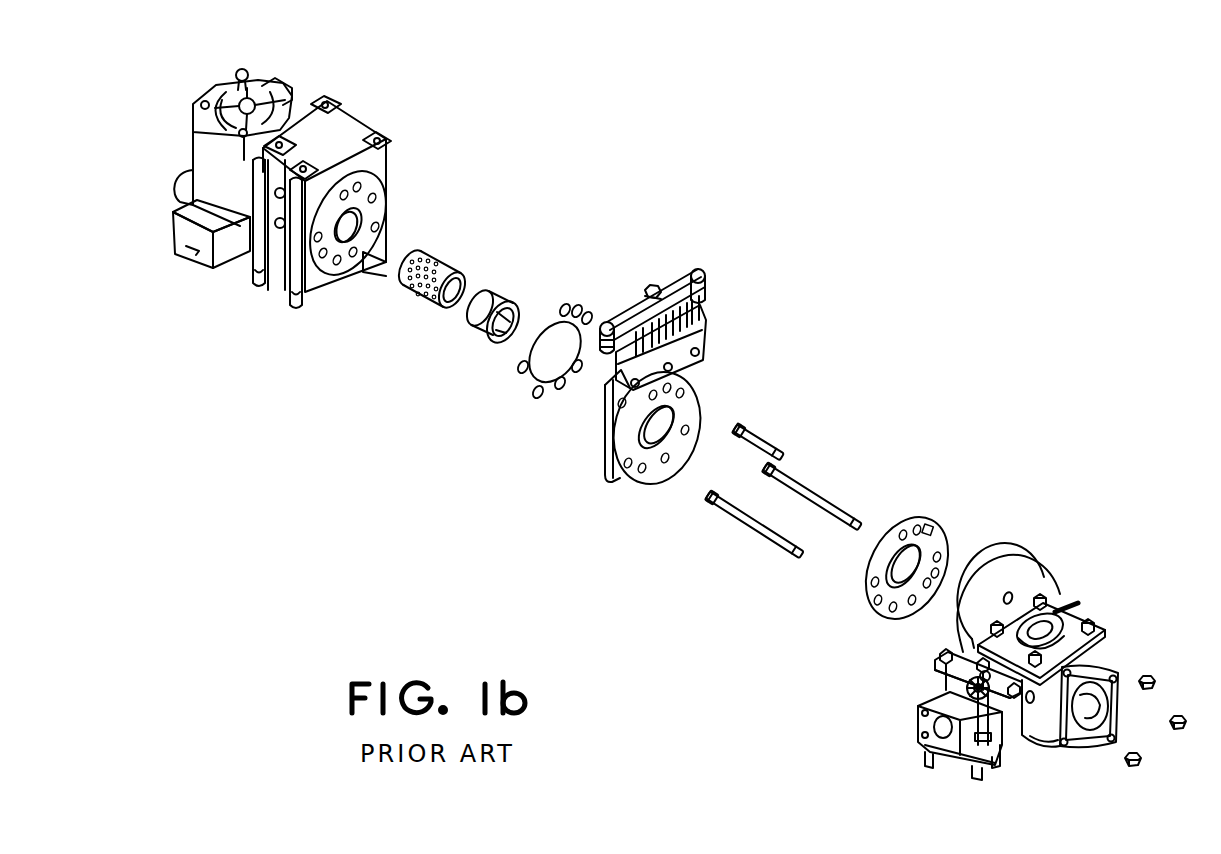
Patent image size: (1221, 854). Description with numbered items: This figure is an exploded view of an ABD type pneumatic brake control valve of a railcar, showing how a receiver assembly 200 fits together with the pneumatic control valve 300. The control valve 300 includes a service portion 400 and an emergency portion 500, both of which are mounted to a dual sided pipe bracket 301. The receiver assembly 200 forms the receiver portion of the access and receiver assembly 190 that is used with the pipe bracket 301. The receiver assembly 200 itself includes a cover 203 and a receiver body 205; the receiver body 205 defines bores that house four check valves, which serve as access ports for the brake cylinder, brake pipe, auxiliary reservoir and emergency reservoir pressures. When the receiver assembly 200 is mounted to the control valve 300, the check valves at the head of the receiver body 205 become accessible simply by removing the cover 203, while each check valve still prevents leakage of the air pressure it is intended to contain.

The access and receiver assembly 190 is at (594, 466).
The receiver assembly 200 is at (660, 379).
The cover 203 is at (680, 282).
The receiver body 205 is at (690, 318).
The pneumatic control valve 300 is at (888, 355).
The pipe bracket 301 is at (326, 295).
The service portion 400 is at (1080, 620).
The emergency portion 500 is at (197, 158).